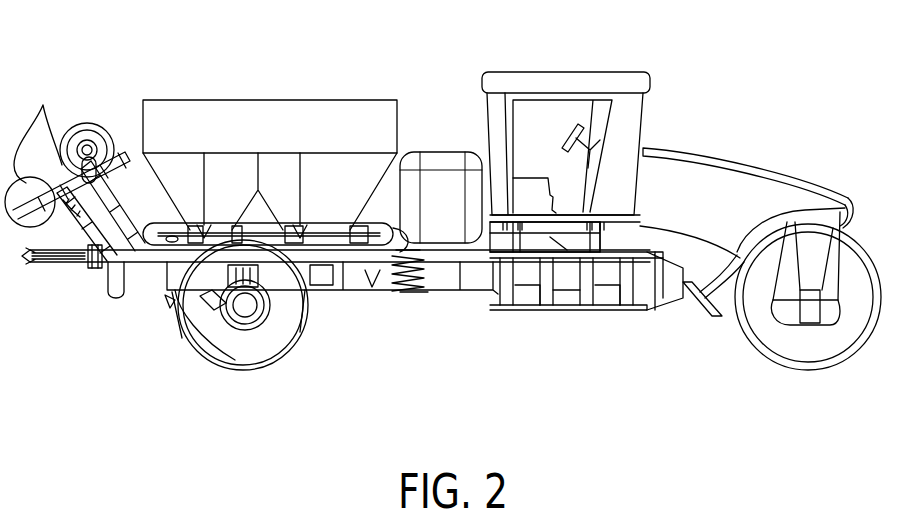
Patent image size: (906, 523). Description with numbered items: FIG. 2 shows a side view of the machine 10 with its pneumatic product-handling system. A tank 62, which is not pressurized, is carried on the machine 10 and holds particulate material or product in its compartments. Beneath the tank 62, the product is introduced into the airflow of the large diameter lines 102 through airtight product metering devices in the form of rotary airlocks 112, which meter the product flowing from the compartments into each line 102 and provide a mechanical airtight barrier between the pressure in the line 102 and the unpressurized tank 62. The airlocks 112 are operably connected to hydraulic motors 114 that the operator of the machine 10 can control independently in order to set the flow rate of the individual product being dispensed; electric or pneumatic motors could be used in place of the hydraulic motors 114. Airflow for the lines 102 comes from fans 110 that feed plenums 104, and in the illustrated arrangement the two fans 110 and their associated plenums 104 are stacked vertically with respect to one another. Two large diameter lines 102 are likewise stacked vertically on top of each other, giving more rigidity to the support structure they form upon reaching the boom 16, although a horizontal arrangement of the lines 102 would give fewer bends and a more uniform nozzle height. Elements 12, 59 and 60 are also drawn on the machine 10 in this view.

The machine 10 is at (530, 350).
The chassis 12 is at (672, 136).
The boom 16 is at (431, 298).
The hood 59 is at (768, 165).
The cab 60 is at (585, 72).
The tank 62 is at (245, 88).
The line 102 is at (113, 262).
The plenum 104 is at (76, 236).
The fan 110 is at (47, 126).
The rotary airlock 112 is at (221, 345).
The hydraulic motor 114 is at (192, 300).